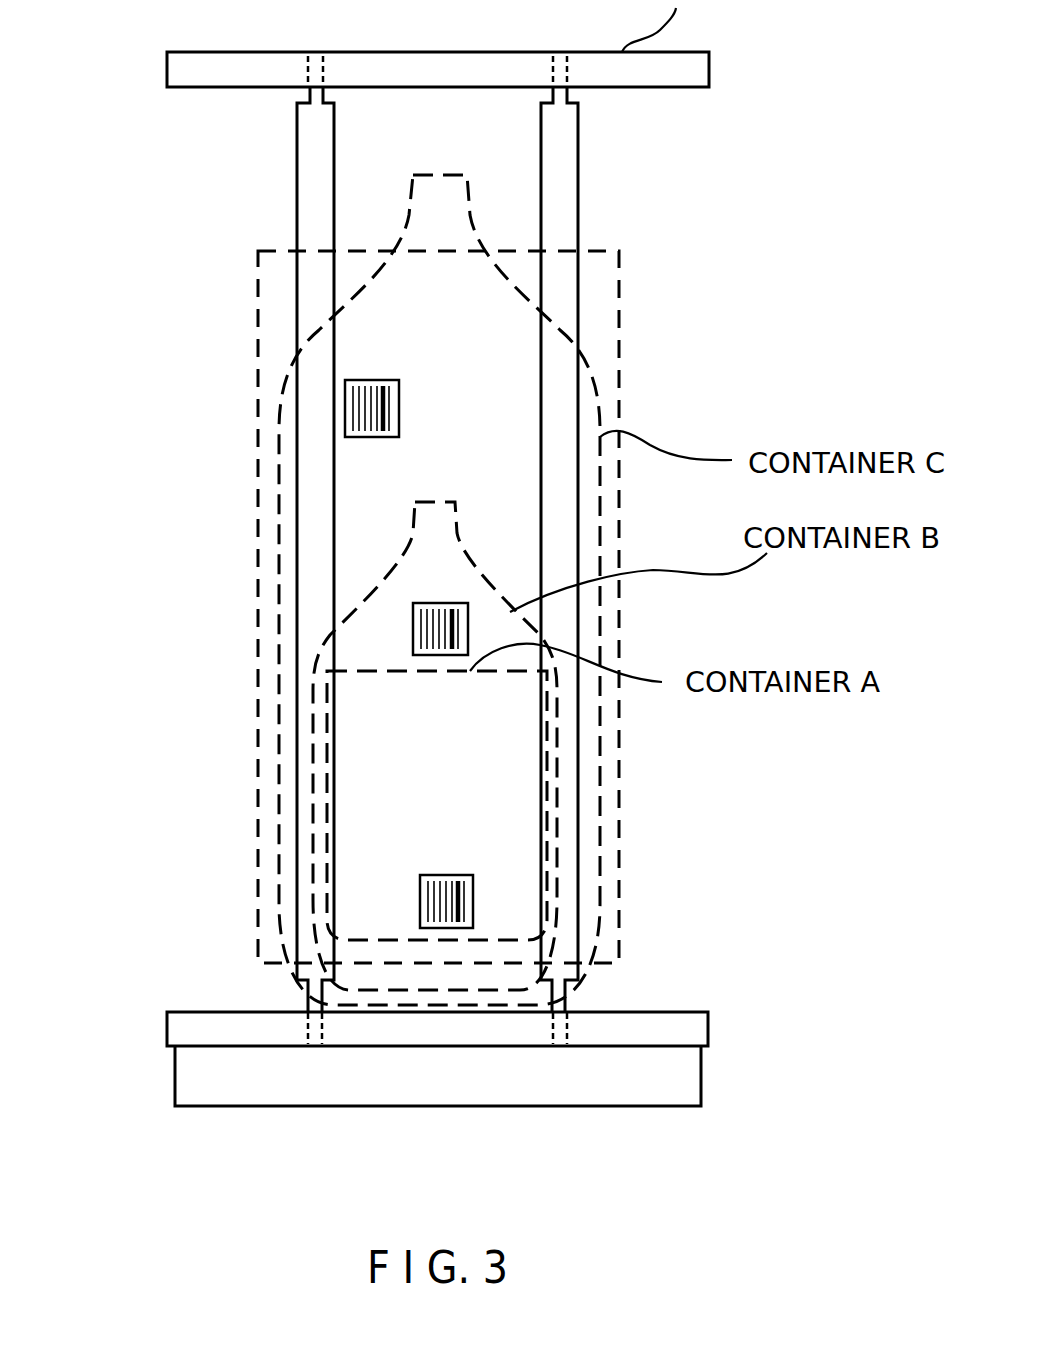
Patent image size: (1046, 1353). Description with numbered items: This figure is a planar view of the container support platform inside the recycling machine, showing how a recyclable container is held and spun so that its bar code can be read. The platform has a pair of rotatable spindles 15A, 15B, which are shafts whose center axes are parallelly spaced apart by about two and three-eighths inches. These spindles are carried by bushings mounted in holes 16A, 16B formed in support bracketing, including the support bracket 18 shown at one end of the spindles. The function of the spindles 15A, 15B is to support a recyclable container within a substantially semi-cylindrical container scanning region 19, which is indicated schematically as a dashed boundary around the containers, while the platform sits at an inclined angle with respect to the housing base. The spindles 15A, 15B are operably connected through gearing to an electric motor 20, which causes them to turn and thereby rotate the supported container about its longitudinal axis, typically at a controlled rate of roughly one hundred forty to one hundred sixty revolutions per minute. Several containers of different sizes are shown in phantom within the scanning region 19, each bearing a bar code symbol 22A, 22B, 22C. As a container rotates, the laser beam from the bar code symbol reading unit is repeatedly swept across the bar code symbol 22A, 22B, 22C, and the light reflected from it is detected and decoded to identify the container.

The rotatable spindle 15A is at (296, 195).
The rotatable spindle 15B is at (579, 128).
The hole 16A is at (307, 70).
The hole 16B is at (552, 70).
The support bracket 18 is at (708, 1023).
The container scanning region 19 is at (258, 803).
The electric motor 20 is at (174, 1080).
The bar code symbol 22A is at (420, 900).
The bar code symbol 22B is at (413, 637).
The bar code symbol 22C is at (345, 398).